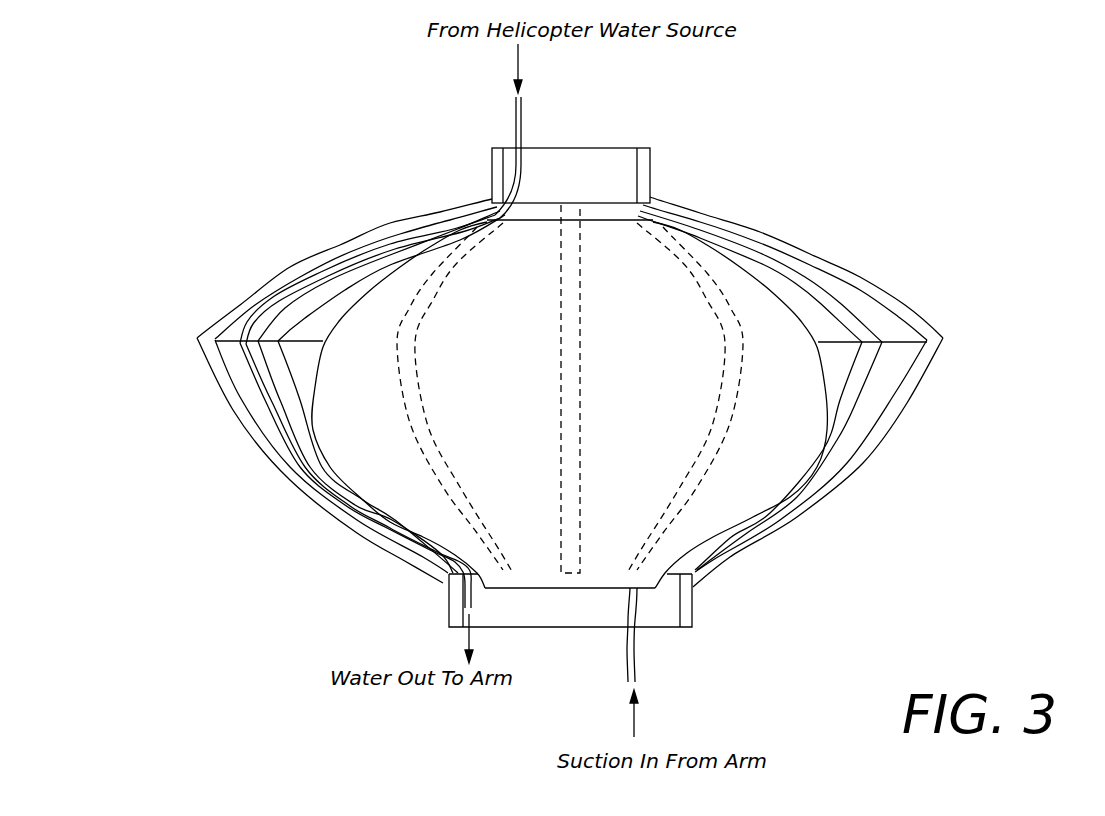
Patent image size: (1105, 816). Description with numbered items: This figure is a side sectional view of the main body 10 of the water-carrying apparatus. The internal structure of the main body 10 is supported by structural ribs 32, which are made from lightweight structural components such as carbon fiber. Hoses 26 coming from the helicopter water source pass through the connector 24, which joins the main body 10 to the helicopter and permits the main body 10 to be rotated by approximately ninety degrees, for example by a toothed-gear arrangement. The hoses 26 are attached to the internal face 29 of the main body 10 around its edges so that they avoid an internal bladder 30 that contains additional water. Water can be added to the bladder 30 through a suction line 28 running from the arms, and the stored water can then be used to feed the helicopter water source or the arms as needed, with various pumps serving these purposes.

The main body 10 is at (906, 398).
The connector 24 is at (492, 148).
The hoses 26 is at (522, 106).
The suction line 28 is at (640, 650).
The internal face 29 is at (232, 328).
The internal bladder 30 is at (322, 362).
The structural ribs 32 is at (722, 390).